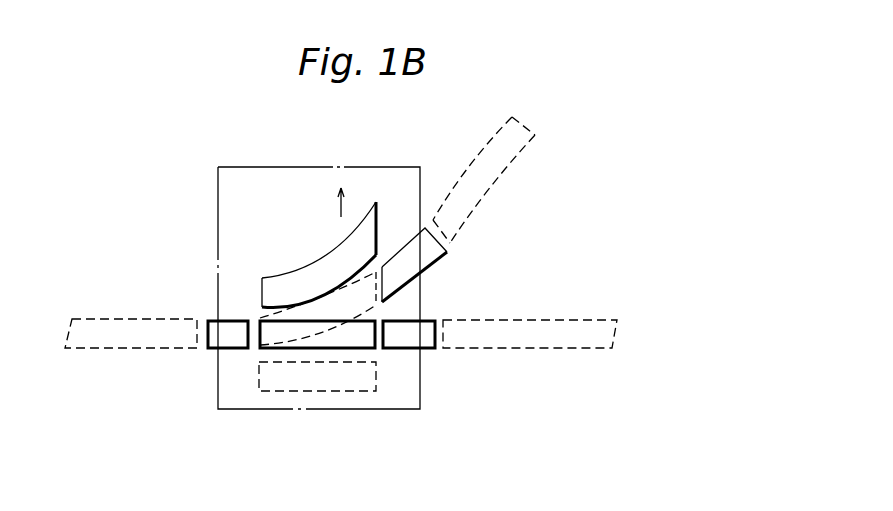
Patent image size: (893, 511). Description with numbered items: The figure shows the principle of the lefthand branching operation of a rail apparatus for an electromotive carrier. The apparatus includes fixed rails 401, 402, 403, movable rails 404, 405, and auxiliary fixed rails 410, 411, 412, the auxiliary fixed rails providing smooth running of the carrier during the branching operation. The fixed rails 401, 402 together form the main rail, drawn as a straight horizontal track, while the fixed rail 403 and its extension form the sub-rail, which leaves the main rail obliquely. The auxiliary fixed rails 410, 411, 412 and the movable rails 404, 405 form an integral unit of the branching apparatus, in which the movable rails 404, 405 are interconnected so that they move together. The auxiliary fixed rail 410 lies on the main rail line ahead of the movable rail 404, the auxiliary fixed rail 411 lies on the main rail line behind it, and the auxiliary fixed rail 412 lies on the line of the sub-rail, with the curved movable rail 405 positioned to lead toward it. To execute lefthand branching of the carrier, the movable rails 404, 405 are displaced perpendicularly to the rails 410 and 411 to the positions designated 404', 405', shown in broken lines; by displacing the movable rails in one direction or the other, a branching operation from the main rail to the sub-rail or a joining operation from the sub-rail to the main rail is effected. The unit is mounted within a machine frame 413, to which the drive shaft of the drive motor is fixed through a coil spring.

The fixed rail 401 is at (110, 315).
The fixed rail 402 is at (500, 348).
The fixed rail 403 is at (502, 192).
The movable rail 404 is at (369, 316).
The displaced position of movable rail 404' is at (332, 404).
The movable rail 405 is at (307, 255).
The displaced position of movable rail 405' is at (318, 282).
The auxiliary fixed rail 410 is at (213, 318).
The auxiliary fixed rail 411 is at (405, 342).
The auxiliary fixed rail 412 is at (413, 243).
The machine frame 413 is at (233, 410).